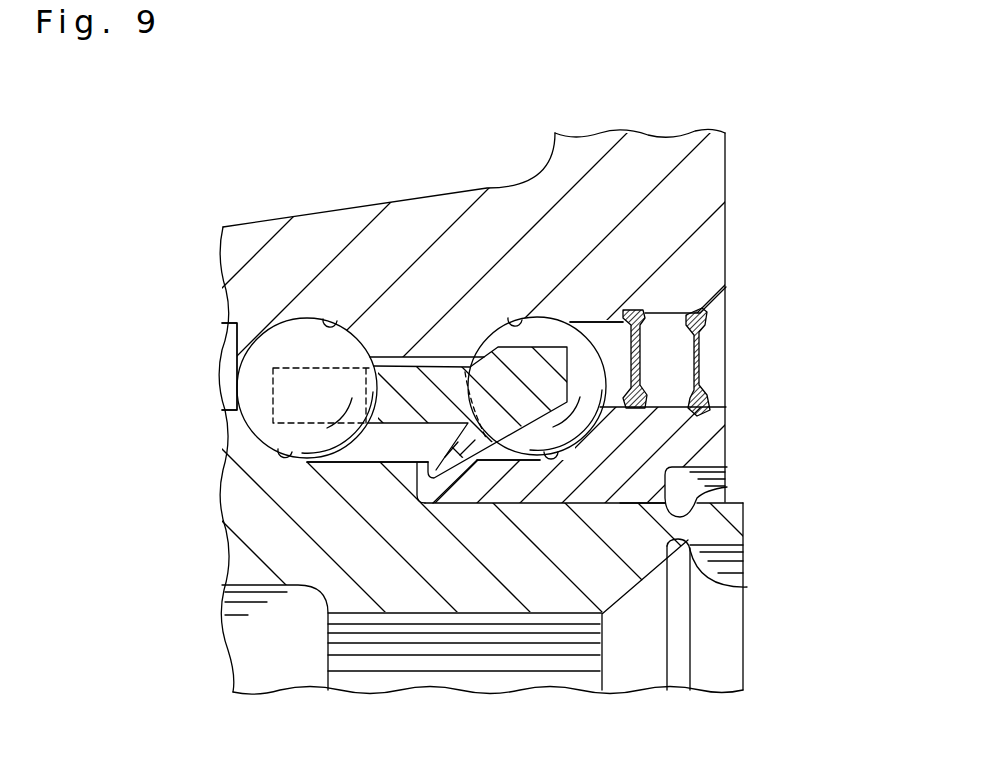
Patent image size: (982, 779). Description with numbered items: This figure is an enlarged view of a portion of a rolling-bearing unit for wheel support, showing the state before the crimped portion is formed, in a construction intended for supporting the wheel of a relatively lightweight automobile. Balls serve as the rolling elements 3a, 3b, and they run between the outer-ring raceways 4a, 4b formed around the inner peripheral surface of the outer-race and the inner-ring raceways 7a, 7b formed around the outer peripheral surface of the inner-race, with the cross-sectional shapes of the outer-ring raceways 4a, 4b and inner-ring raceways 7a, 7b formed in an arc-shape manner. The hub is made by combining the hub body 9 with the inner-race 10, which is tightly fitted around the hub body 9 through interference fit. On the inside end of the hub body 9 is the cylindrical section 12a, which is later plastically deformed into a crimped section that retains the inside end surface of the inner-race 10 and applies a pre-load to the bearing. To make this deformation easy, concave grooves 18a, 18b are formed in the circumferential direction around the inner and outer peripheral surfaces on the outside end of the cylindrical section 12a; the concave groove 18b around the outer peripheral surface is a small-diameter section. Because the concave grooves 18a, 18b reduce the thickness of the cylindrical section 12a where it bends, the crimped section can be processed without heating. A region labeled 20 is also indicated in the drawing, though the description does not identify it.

The rolling element 3a is at (300, 335).
The rolling element 3b is at (538, 335).
The outer-ring raceway 4a is at (324, 320).
The outer-ring raceway 4b is at (514, 320).
The inner-ring raceway 7a is at (285, 454).
The inner-ring raceway 7b is at (551, 457).
The hub body 9 is at (240, 478).
The inner-race 10 is at (718, 435).
The cylindrical section 12a is at (730, 512).
The concave groove 18a is at (747, 587).
The concave groove 18b is at (727, 487).
The gap 20 is at (620, 503).